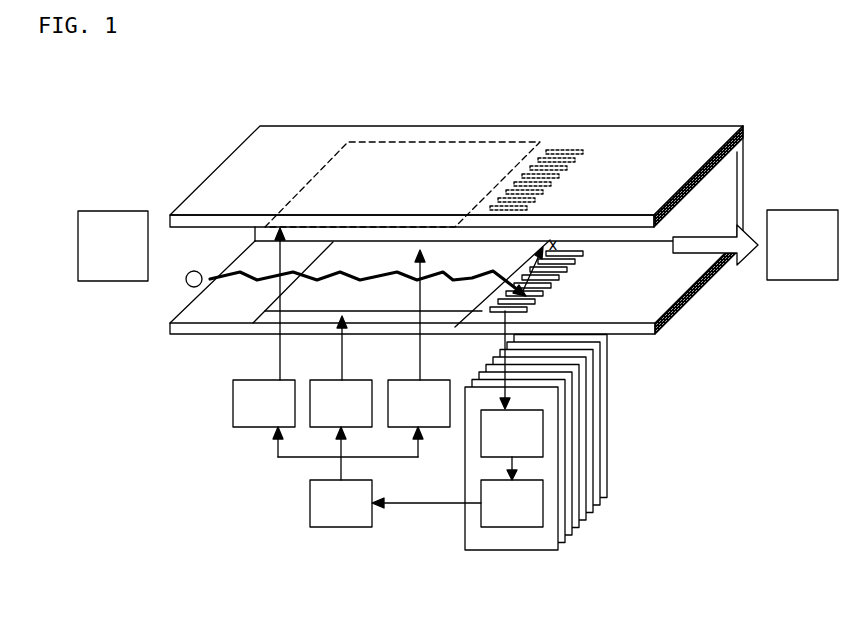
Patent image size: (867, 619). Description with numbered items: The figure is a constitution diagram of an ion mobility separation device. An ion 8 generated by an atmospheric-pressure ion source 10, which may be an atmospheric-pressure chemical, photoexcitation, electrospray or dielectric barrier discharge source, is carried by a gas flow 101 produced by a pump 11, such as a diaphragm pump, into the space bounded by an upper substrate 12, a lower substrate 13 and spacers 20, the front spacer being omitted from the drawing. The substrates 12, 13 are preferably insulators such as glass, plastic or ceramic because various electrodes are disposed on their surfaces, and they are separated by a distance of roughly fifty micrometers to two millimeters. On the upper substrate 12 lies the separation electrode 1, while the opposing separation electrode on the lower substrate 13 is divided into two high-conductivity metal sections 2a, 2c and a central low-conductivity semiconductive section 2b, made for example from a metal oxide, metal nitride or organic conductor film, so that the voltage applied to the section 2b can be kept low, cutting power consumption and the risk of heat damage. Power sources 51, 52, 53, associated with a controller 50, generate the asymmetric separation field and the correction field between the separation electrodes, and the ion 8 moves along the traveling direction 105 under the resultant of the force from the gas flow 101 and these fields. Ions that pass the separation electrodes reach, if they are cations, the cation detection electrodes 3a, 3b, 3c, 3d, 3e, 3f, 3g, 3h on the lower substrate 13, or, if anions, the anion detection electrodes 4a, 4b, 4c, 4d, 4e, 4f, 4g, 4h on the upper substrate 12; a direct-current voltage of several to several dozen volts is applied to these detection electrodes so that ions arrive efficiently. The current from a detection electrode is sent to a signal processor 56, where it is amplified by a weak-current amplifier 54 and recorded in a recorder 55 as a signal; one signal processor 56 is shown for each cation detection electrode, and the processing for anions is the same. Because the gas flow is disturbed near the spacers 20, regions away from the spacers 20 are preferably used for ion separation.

The separation electrode 1 is at (402, 184).
The high-conductivity section of separation electrode 2a is at (272, 320).
The low-conductivity section of separation electrode 2b is at (342, 288).
The high-conductivity section of separation electrode 2c is at (380, 242).
The cation detection electrode 3a is at (528, 309).
The cation detection electrode 3b is at (536, 301).
The cation detection electrode 3c is at (544, 293).
The cation detection electrode 3d is at (552, 285).
The cation detection electrode 3e is at (560, 277).
The cation detection electrode 3f is at (568, 269).
The cation detection electrode 3g is at (576, 261).
The cation detection electrode 3h is at (584, 253).
The anion detection electrode 4a is at (527, 212).
The anion detection electrode 4b is at (535, 204).
The anion detection electrode 4c is at (543, 196).
The anion detection electrode 4d is at (551, 188).
The anion detection electrode 4e is at (559, 180).
The anion detection electrode 4f is at (567, 172).
The anion detection electrode 4g is at (575, 164).
The anion detection electrode 4h is at (583, 156).
The ion 8 is at (186, 286).
The ion source 10 is at (113, 246).
The pump 11 is at (802, 245).
The substrate 12 is at (280, 142).
The substrate 13 is at (636, 335).
The spacer 20 is at (745, 163).
The controller 50 is at (348, 477).
The power source 51 is at (264, 327).
The power source 52 is at (341, 371).
The power source 53 is at (419, 338).
The weak-current amplifier 54 is at (512, 433).
The data recorder 55 is at (457, 492).
The signal processor 56 is at (558, 517).
The gas flow 101 is at (722, 233).
The ion-traveling direction 105 is at (447, 275).